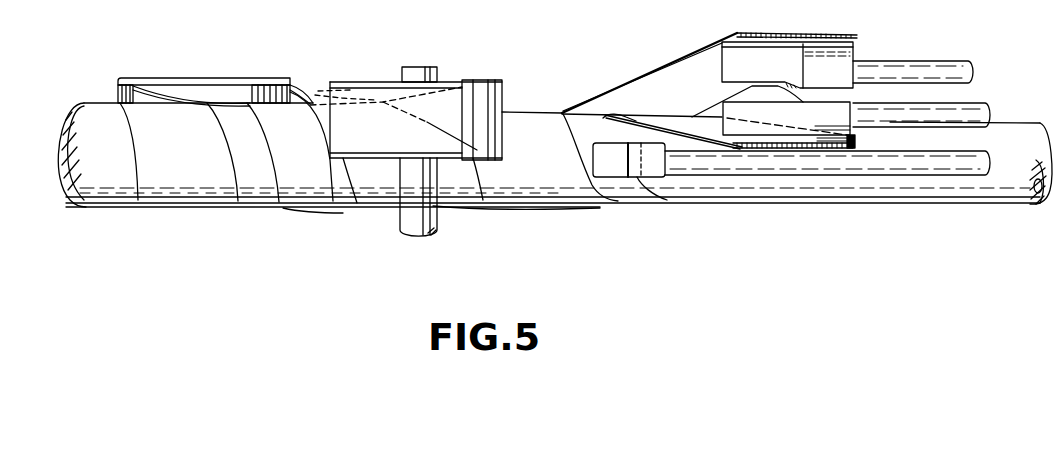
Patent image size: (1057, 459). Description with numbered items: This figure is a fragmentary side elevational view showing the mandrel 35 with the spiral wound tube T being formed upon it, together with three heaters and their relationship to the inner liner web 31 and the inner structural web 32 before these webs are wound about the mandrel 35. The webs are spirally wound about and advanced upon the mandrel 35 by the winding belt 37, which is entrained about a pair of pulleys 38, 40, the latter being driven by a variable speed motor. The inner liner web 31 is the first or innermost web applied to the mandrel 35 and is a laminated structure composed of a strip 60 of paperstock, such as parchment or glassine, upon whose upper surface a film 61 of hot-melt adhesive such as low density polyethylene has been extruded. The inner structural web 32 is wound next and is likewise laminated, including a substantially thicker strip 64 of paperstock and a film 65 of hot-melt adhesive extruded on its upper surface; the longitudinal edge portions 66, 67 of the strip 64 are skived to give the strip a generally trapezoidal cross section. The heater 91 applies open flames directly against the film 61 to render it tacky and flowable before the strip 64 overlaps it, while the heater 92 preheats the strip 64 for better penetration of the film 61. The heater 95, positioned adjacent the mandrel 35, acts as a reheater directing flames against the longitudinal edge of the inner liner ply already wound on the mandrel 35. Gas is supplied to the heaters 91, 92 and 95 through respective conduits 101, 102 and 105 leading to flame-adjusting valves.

The mandrel 35 is at (963, 196).
The spiral wound tube T is at (180, 191).
The pulley 38 is at (236, 80).
The winding belt 37 is at (412, 131).
The pulley 40 is at (469, 82).
The heater 95 is at (667, 182).
The longitudinal edge portion 66 is at (595, 100).
The inner structural web 32 is at (653, 66).
The film of hot-melt adhesive 65 is at (787, 32).
The heater 92 is at (750, 70).
The strip of paperstock material 64 is at (803, 44).
The longitudinal edge portion 67 is at (746, 91).
The heater 91 is at (786, 120).
The film of hot-melt adhesive 61 is at (685, 121).
The inner liner web 31 is at (642, 122).
The strip of paperstock material 60 is at (812, 150).
The conduit 105 is at (925, 166).
The conduit 101 is at (928, 113).
The conduit 102 is at (931, 71).